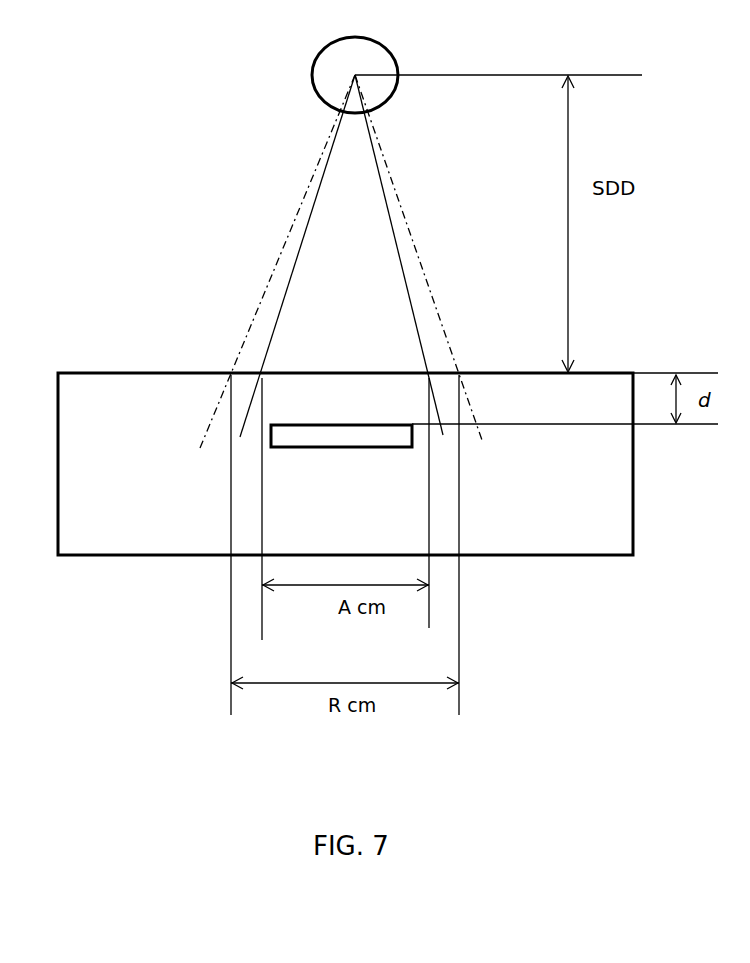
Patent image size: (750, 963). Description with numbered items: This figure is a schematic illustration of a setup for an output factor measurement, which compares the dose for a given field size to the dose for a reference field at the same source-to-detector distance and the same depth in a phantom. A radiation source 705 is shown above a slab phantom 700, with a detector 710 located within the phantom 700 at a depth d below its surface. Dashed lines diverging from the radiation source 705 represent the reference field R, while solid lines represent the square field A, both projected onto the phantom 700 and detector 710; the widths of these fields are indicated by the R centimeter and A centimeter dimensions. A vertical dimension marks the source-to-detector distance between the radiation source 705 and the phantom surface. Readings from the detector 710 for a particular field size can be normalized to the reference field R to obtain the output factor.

The phantom 700 is at (90, 372).
The radiation source 705 is at (326, 49).
The detector 710 is at (343, 448).